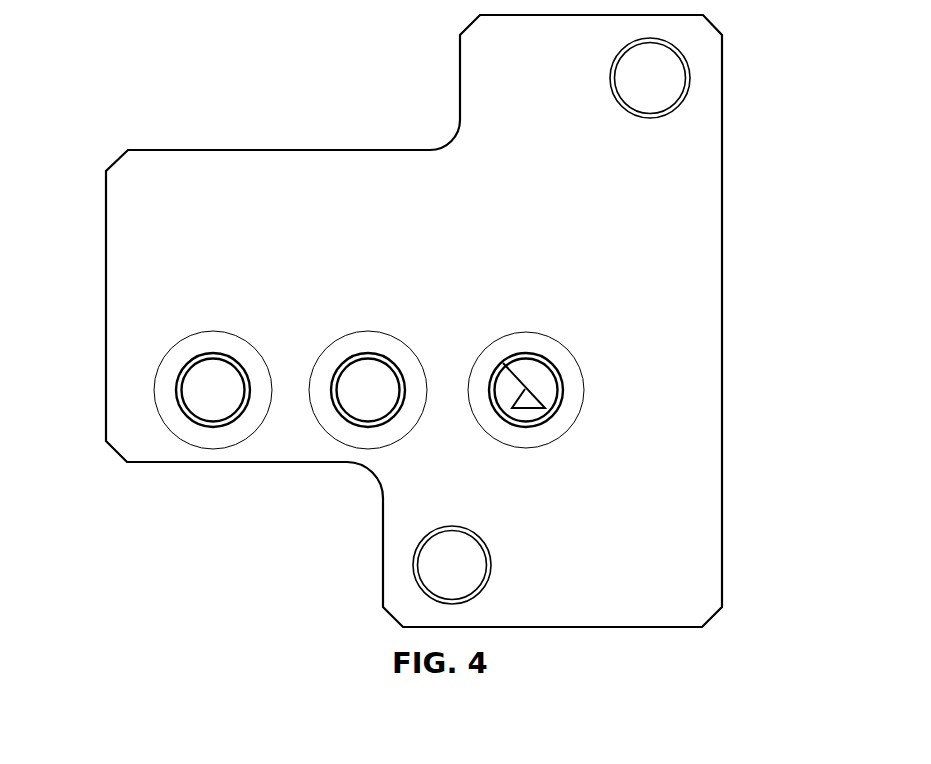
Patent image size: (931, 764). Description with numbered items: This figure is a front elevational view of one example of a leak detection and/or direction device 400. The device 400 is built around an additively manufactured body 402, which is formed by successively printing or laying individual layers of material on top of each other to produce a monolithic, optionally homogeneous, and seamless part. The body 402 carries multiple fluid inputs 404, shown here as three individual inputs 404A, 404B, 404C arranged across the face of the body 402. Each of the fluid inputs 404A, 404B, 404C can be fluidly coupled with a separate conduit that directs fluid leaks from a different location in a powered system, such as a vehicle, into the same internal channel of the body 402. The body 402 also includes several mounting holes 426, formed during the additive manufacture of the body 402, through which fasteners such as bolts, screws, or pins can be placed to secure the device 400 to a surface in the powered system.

The leak detection and/or direction device 400 is at (236, 82).
The additively manufactured body 402 is at (670, 195).
The fluid inputs 404 is at (198, 386).
The fluid input 404A is at (215, 390).
The fluid input 404B is at (369, 390).
The fluid input 404C is at (526, 388).
The mounting holes 426 is at (677, 93).